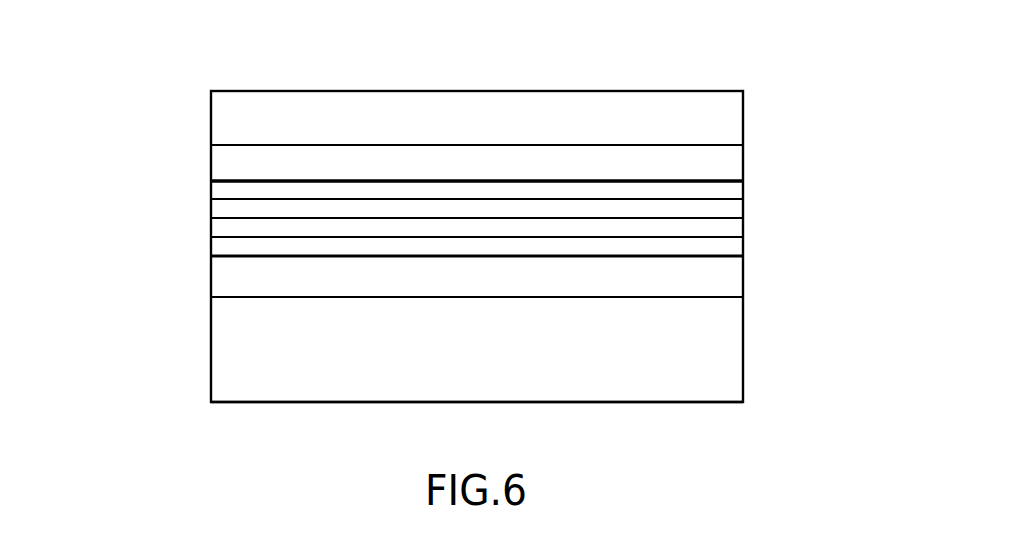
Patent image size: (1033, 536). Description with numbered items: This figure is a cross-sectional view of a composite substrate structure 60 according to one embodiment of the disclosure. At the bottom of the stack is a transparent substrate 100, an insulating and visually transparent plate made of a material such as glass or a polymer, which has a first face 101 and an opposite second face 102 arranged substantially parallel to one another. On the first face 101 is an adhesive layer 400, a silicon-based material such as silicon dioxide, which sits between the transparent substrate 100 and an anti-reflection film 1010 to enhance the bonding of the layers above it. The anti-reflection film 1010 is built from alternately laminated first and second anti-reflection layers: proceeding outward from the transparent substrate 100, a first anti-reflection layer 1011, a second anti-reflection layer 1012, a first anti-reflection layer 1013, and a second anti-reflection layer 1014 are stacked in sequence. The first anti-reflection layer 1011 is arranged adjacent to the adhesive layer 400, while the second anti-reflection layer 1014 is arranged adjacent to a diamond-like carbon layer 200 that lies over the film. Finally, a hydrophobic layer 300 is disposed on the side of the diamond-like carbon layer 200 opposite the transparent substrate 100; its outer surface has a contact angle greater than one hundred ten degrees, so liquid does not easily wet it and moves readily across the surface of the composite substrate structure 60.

The composite substrate structure 60 is at (764, 50).
The hydrophobic layer 300 is at (728, 118).
The diamond-like carbon layer 200 is at (728, 164).
The anti-reflection film 1010 is at (103, 162).
The second anti-reflection layer 1014 is at (225, 191).
The first anti-reflection layer 1013 is at (225, 210).
The second anti-reflection layer 1012 is at (223, 228).
The first anti-reflection layer 1011 is at (225, 248).
The adhesive layer 400 is at (728, 272).
The first face 101 is at (725, 296).
The transparent substrate 100 is at (728, 353).
The second face 102 is at (725, 403).